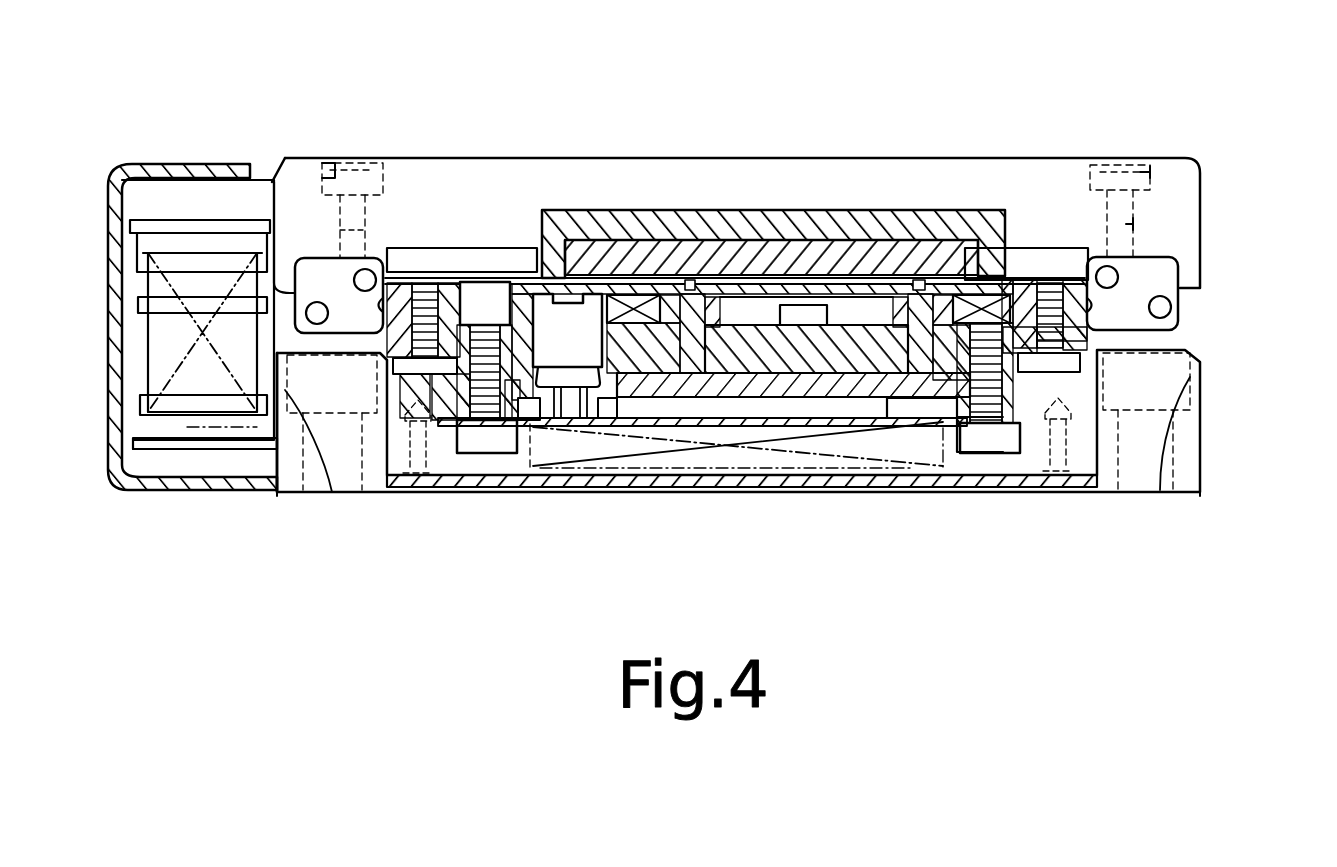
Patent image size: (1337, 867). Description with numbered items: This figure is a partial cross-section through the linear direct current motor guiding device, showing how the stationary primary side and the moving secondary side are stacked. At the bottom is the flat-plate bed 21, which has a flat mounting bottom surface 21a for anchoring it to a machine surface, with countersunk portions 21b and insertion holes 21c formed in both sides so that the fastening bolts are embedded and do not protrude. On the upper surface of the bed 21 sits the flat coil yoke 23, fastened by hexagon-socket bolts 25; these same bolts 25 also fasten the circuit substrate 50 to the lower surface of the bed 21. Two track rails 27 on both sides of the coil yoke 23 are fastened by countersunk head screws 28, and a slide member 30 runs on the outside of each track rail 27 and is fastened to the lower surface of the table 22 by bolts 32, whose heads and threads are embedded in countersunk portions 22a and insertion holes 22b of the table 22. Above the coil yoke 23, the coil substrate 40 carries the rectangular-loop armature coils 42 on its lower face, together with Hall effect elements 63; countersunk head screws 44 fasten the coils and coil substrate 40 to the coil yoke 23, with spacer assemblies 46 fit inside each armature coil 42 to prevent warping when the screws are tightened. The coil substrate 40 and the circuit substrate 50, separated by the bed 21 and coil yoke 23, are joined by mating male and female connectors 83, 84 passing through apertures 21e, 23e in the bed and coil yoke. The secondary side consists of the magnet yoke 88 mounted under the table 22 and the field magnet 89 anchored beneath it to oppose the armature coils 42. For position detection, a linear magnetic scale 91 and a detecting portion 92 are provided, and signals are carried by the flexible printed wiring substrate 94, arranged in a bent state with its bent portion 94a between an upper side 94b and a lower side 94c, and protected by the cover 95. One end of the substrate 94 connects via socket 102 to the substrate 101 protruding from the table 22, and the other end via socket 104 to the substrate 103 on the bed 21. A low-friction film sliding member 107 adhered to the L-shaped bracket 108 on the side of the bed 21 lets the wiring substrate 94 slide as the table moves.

The bed 21 is at (1201, 434).
The flat mounting bottom surface 21a is at (293, 493).
The countersunk portions 21b is at (330, 493).
The insertion holes 21c is at (310, 493).
The aperture 21e is at (527, 460).
The table 22 is at (1200, 161).
The countersunk portions 22a is at (322, 185).
The insertion holes 22b is at (315, 193).
The coil yoke 23 is at (885, 350).
The aperture 23e is at (630, 374).
The bolts 25 is at (480, 455).
The track rail 27 is at (345, 240).
The countersunk head screws 28 is at (413, 370).
The slide member 30 is at (295, 307).
The bolts 32 is at (343, 163).
The coil substrate 40 is at (520, 282).
The armature coils 42 is at (1005, 290).
The countersunk head screws 44 is at (690, 285).
The spacer assemblies 46 is at (747, 313).
The circuit substrate 50 is at (722, 380).
The Hall effect elements 63 is at (562, 296).
The male connector 83 is at (541, 426).
The female connector 84 is at (589, 388).
The magnet yoke 88 is at (878, 222).
The field magnet 89 is at (798, 250).
The linear magnetic scale 91 is at (443, 275).
The detecting portion 92 is at (488, 262).
The flexible printed wiring substrate 94 is at (146, 366).
The bent portion 94a is at (140, 302).
The upper side 94b is at (145, 237).
The lower side 94c is at (147, 407).
The cover 95 is at (132, 166).
The substrate 101 is at (142, 205).
The socket 102 is at (165, 220).
The substrate 103 is at (133, 441).
The socket 104 is at (140, 423).
The sliding member 107 is at (142, 251).
The bracket 108 is at (165, 275).